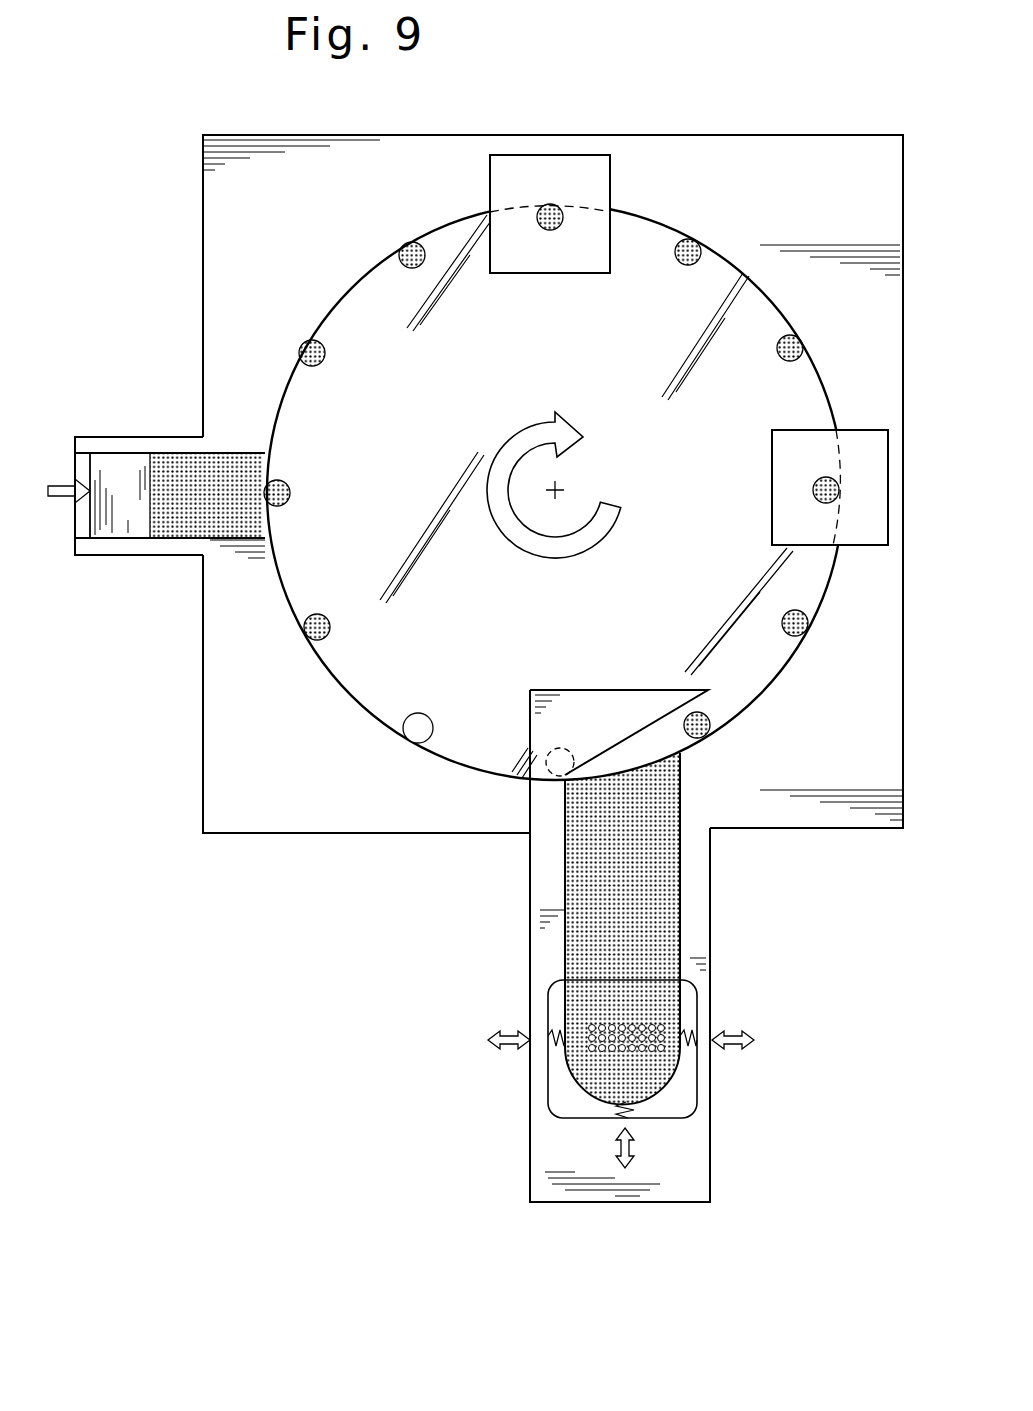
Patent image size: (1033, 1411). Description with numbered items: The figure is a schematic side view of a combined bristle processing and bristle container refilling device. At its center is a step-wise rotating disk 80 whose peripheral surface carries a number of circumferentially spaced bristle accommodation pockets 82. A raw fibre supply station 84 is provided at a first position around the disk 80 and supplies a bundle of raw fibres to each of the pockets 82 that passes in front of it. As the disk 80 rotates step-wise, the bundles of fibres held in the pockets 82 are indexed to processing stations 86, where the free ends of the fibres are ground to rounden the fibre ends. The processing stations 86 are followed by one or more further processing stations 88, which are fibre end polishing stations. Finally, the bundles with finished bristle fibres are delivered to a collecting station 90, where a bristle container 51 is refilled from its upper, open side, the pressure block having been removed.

The step-wise rotating disk 80 is at (625, 603).
The bristle accommodation pockets 82 is at (398, 266).
The raw fibre supply station 84 is at (133, 548).
The processing stations 86 is at (585, 175).
The processing stations 88 is at (870, 435).
The collecting station 90 is at (517, 787).
The bristle container 51 is at (686, 918).